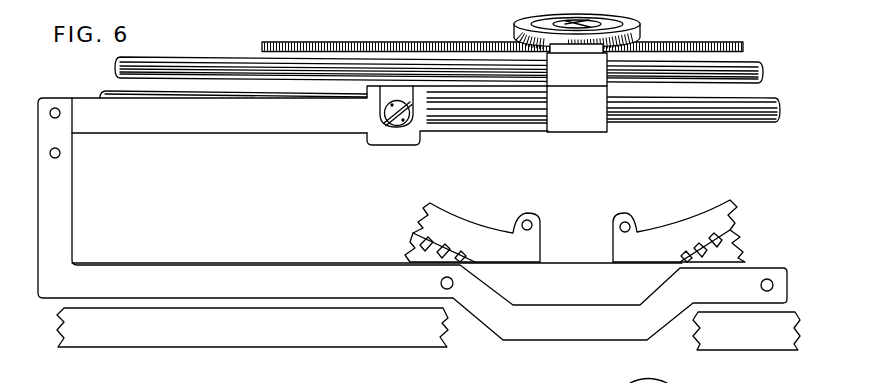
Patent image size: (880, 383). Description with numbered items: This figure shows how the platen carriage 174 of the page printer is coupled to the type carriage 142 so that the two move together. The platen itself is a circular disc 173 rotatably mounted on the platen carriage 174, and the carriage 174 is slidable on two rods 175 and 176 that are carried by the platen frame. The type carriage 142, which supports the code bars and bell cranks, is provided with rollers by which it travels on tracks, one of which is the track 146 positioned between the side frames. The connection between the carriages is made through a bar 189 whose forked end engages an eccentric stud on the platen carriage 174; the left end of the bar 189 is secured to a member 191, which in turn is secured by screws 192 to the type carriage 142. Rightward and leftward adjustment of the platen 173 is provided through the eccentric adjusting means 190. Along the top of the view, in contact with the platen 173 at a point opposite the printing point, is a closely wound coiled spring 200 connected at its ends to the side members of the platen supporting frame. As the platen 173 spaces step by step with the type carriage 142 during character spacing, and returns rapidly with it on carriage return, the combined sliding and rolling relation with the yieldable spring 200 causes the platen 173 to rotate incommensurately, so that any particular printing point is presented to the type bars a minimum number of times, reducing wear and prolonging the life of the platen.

The closely wound coiled spring 200 is at (433, 42).
The circular disc platen 173 is at (640, 28).
The rod 176 is at (743, 67).
The rod 175 is at (745, 120).
The platen carriage 174 is at (562, 132).
The eccentric adjusting means 190 is at (407, 123).
The bar 189 is at (268, 131).
The member 191 is at (65, 211).
The screws 192 is at (441, 281).
The type carriage 142 is at (738, 231).
The track 146 is at (362, 338).